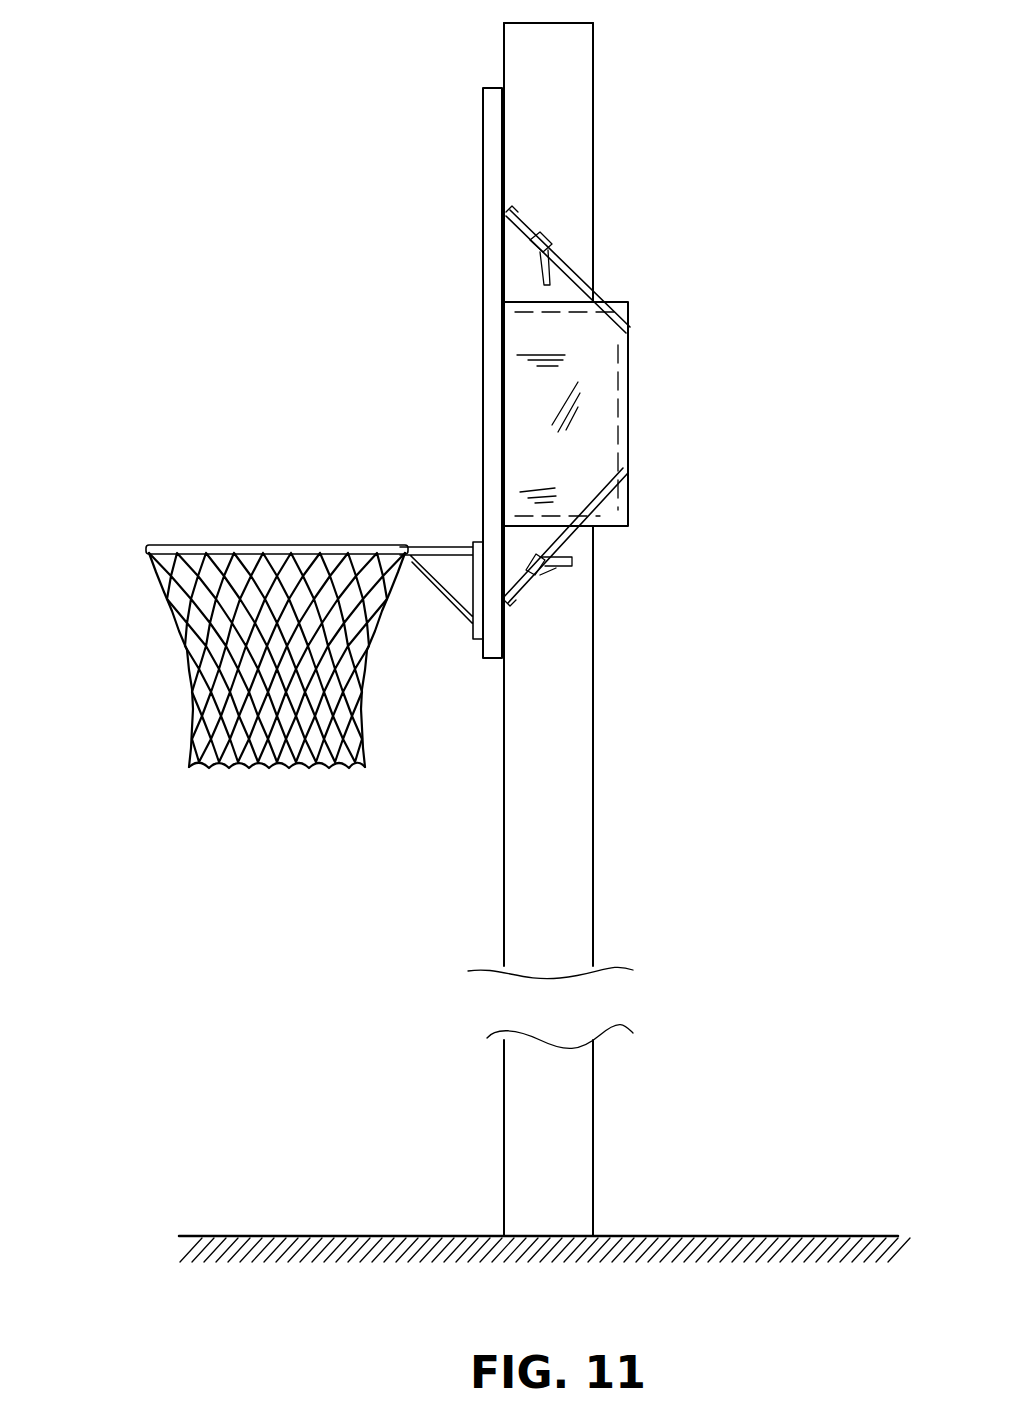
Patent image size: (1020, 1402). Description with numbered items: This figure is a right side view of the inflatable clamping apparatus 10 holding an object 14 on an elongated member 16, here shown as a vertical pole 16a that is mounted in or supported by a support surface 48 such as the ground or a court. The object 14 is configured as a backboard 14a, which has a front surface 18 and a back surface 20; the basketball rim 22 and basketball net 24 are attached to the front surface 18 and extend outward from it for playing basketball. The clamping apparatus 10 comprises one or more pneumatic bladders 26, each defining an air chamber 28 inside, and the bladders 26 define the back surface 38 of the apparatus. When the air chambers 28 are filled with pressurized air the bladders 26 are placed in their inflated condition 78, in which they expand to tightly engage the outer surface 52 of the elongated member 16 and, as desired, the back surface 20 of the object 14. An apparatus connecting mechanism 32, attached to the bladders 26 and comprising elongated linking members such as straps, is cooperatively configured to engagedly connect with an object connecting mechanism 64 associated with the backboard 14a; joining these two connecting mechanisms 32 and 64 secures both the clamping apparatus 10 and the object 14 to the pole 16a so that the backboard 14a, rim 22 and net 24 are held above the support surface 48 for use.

The clamping apparatus 10 is at (597, 449).
The object 14 is at (406, 497).
The backboard 14a is at (494, 357).
The elongated member 16 is at (503, 1103).
The vertical pole 16a is at (567, 50).
The front surface 18 is at (482, 185).
The back surface 20 is at (506, 130).
The basketball rim 22 is at (146, 550).
The basketball net 24 is at (213, 627).
The pneumatic bladder 26 is at (640, 420).
The air chamber 28 is at (530, 432).
The apparatus connecting mechanism 32 is at (594, 280).
The back surface 38 is at (638, 362).
The support surface 48 is at (741, 1234).
The outer surface 52 is at (530, 48).
The object connecting mechanism 64 is at (528, 224).
The inflated condition 78 is at (646, 460).